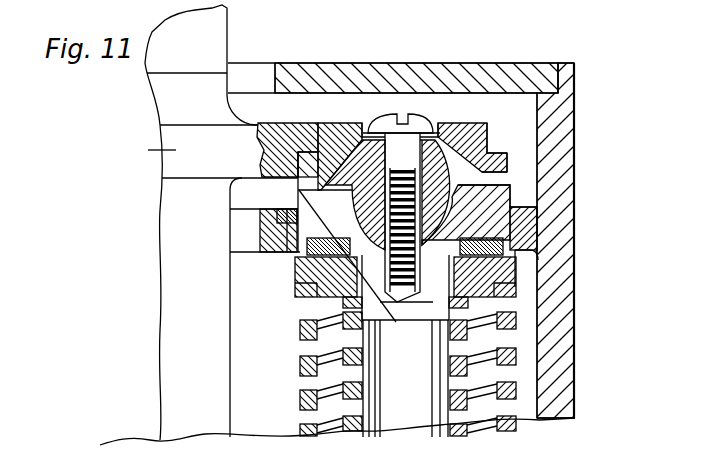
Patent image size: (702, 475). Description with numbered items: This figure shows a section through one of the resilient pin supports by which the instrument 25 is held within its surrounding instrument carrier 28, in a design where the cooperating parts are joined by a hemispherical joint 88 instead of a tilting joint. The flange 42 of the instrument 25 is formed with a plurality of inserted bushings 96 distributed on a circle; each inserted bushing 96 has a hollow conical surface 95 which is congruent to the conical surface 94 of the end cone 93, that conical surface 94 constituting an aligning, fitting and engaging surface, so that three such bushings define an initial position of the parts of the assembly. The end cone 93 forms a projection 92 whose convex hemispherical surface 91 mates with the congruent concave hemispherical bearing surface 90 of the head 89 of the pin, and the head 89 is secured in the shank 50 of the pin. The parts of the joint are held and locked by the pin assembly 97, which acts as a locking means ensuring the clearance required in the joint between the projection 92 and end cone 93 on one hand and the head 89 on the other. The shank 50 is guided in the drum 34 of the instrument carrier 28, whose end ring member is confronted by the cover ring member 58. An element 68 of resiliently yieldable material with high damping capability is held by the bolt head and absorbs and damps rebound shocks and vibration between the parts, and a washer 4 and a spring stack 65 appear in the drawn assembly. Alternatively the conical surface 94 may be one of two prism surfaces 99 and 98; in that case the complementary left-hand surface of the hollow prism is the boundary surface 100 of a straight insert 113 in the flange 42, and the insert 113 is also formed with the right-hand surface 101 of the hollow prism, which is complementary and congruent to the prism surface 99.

The washer 4 is at (378, 122).
The instrument 25 is at (158, 241).
The instrument carrier 28 is at (583, 324).
The drum 34 is at (567, 277).
The flange 42 is at (160, 151).
The shank 50 is at (428, 417).
The cover ring member 58 is at (400, 78).
The leaf spring stack 65 is at (299, 380).
The element of resiliently yieldable material 68 is at (297, 268).
The hemispherical joint 88 is at (428, 323).
The head 89 is at (520, 216).
The hemispherical concave bearing surface 90 is at (353, 188).
The convex hemispherical surface 91 is at (364, 126).
The projection 92 is at (508, 197).
The end cone 93 is at (431, 140).
The conical surface 94 is at (332, 127).
The hollow conical surface 95 is at (446, 170).
The inserted bushing 96 is at (316, 130).
The pin assembly 97 is at (397, 325).
The prism surface 98 is at (507, 165).
The prism surface 99 is at (352, 128).
The boundary surface 100 is at (300, 180).
The right-hand surface 101 is at (511, 135).
The insert 113 is at (470, 135).